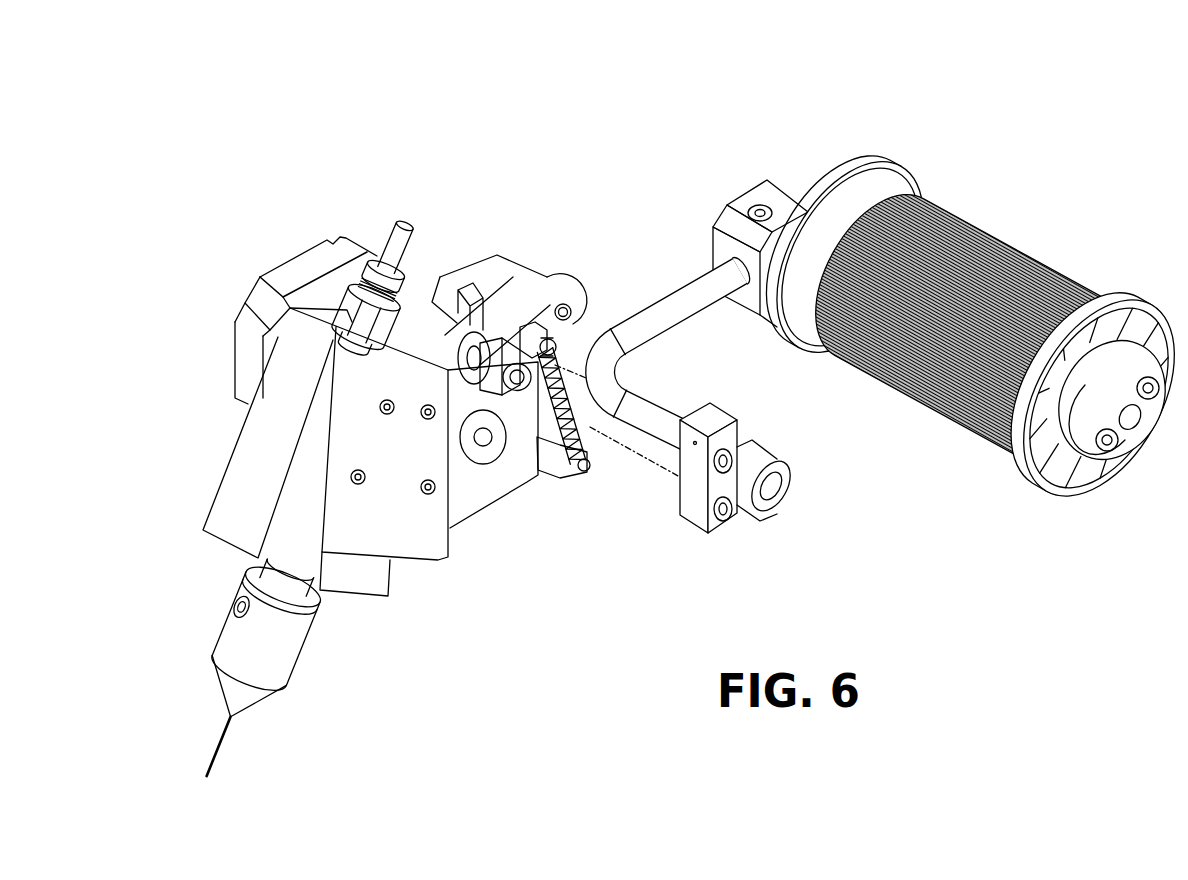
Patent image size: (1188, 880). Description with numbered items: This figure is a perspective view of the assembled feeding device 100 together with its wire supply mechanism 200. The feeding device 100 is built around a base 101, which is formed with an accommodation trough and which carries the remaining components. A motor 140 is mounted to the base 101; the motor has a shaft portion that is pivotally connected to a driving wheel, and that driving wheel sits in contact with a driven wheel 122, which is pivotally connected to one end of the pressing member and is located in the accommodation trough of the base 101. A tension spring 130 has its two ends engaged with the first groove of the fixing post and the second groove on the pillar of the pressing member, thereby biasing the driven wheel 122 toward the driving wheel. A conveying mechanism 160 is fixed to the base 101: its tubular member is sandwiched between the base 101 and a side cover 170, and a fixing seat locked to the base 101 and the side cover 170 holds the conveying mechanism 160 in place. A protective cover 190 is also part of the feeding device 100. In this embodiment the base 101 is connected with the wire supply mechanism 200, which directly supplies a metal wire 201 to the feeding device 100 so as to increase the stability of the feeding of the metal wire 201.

The feeding device 100 is at (542, 252).
The base 101 is at (252, 443).
The driven wheel 122 is at (452, 320).
The tension spring 130 is at (583, 468).
The motor 140 is at (313, 263).
The conveying mechanism 160 is at (314, 675).
The side cover 170 is at (408, 538).
The protective cover 190 is at (487, 484).
The wire supply mechanism 200 is at (912, 152).
The metal wire 201 is at (1005, 243).